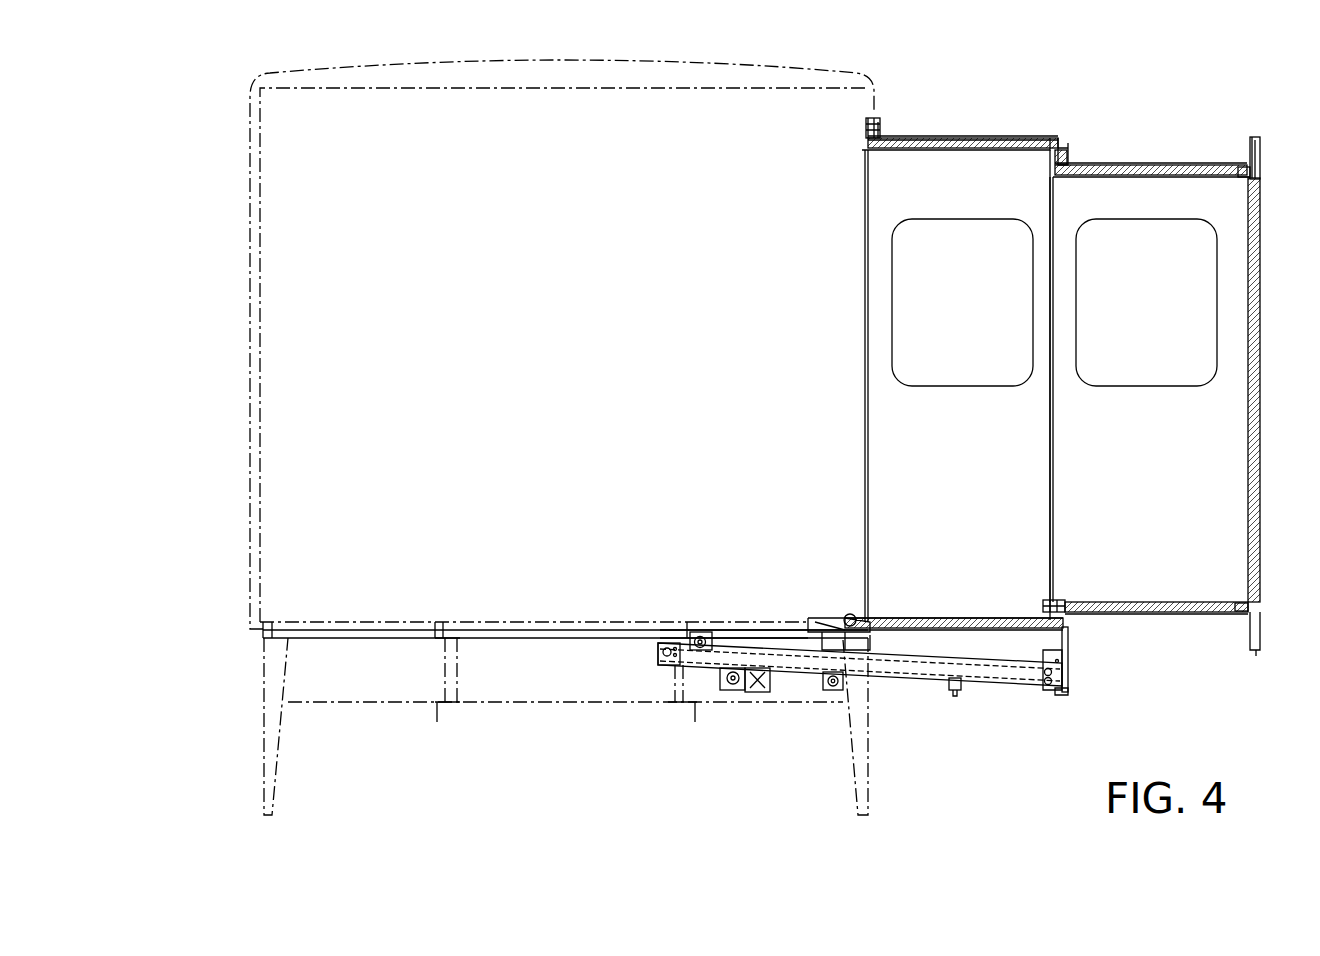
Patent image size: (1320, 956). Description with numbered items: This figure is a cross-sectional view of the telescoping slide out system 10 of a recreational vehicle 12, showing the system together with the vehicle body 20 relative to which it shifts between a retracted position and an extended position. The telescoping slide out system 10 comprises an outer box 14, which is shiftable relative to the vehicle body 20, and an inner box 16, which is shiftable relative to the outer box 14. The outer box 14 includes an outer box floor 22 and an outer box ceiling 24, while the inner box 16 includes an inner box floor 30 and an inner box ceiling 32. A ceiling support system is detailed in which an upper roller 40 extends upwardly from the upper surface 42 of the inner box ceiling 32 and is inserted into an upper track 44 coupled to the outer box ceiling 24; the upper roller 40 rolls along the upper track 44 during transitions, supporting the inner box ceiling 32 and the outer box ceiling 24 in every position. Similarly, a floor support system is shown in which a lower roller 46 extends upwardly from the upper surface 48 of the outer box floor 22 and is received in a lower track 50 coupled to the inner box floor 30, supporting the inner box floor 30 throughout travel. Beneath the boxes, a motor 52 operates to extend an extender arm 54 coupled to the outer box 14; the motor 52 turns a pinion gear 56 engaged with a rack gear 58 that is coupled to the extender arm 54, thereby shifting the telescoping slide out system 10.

The telescoping slide out system 10 is at (1073, 126).
The recreational vehicle 12 is at (225, 133).
The outer box 14 is at (998, 175).
The inner box 16 is at (1170, 200).
The vehicle body 20 is at (878, 100).
The outer box floor 22 is at (972, 618).
The outer box ceiling 24 is at (910, 140).
The inner box floor 30 is at (1163, 601).
The inner box ceiling 32 is at (1225, 165).
The upper roller 40 is at (1064, 158).
The upper surface 42 is at (1130, 170).
The upper track 44 is at (955, 145).
The lower roller 46 is at (1060, 606).
The upper surface 48 is at (902, 618).
The lower track 50 is at (1135, 607).
The motor 52 is at (755, 681).
The extender arm 54 is at (985, 676).
The pinion gear 56 is at (733, 680).
The rack gear 58 is at (903, 676).